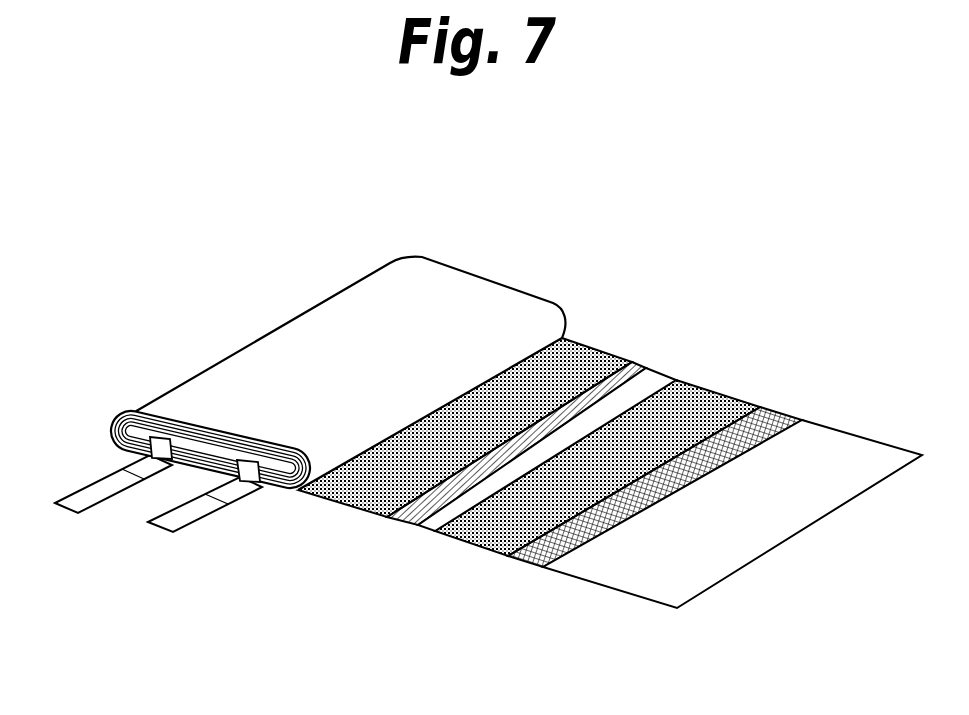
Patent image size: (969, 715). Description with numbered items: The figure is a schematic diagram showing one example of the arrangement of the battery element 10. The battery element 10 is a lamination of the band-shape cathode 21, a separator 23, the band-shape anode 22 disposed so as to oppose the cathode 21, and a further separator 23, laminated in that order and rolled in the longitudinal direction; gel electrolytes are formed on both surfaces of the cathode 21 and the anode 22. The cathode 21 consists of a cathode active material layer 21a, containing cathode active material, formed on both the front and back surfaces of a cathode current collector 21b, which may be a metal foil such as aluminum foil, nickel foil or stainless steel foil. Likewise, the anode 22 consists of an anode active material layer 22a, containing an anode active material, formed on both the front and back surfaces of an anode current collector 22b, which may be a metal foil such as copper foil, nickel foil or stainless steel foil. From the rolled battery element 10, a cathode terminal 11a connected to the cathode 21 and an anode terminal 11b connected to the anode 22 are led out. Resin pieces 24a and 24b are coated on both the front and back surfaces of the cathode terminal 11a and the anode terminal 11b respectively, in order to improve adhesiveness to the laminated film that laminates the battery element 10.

The battery element 10 is at (458, 156).
The cathode terminal 11a is at (148, 523).
The anode terminal 11b is at (55, 505).
The cathode 21 is at (667, 545).
The cathode active material layer 21a is at (543, 573).
The cathode current collector 21b is at (587, 580).
The anode 22 is at (469, 499).
The anode active material layer 22a is at (395, 522).
The anode current collector 22b is at (432, 535).
The separator 23 is at (580, 348).
The resin piece 24a is at (227, 503).
The resin piece 24b is at (138, 482).